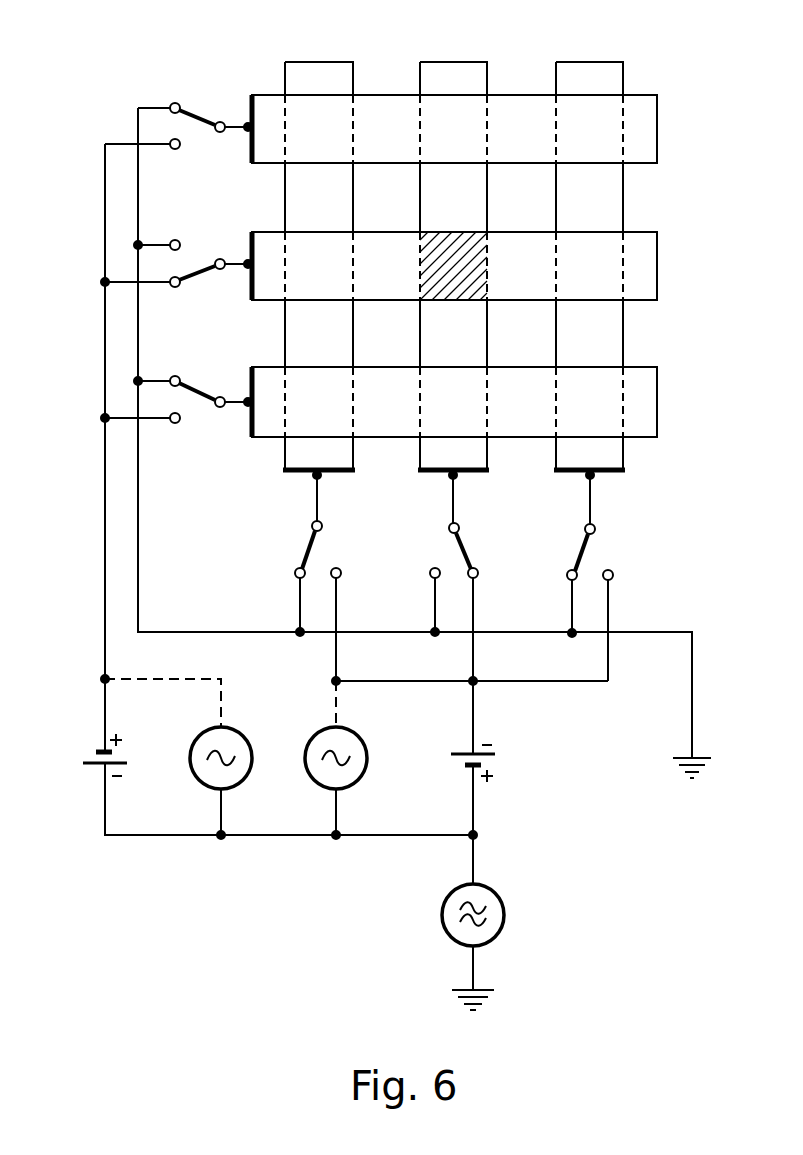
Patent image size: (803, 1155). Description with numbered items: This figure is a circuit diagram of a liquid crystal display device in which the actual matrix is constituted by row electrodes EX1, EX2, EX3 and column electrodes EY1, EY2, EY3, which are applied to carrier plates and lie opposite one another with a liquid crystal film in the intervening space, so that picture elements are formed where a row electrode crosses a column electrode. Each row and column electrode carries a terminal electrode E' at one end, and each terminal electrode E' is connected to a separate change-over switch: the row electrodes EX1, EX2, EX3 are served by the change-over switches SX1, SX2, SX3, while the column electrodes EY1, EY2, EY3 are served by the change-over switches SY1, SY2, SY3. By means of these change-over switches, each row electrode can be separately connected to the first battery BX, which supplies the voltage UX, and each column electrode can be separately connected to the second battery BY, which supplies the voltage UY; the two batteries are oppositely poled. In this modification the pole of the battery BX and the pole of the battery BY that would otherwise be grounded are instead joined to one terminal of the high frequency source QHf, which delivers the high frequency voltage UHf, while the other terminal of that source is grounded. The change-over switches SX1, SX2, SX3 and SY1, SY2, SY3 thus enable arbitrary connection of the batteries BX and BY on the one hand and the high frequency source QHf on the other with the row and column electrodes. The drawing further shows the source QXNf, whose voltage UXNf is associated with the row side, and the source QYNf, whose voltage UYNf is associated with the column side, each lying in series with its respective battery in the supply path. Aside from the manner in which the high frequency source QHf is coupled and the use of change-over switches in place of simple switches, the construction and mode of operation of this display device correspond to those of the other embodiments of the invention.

The column electrode EY1 is at (319, 64).
The column electrode EY2 is at (454, 64).
The column electrode EY3 is at (590, 64).
The row electrode EX1 is at (648, 128).
The row electrode EX2 is at (647, 266).
The row electrode EX3 is at (647, 402).
The terminal electrode E' is at (419, 294).
The change-over switch SX1 is at (176, 139).
The change-over switch SX2 is at (174, 276).
The change-over switch SX3 is at (174, 413).
The change-over switch SY1 is at (332, 578).
The change-over switch SY2 is at (470, 614).
The change-over switch SY3 is at (604, 578).
The first battery BX is at (83, 763).
The X bias voltage UX is at (133, 744).
The X low-frequency voltage UXNf is at (192, 703).
The X low-frequency source QXNf is at (235, 781).
The Y low-frequency voltage UYNf is at (365, 704).
The Y low-frequency source QYNf is at (350, 782).
The second battery BY is at (452, 790).
The Y bias voltage UY is at (503, 750).
The high frequency source UHf is at (497, 856).
The high frequency source QHf is at (448, 947).